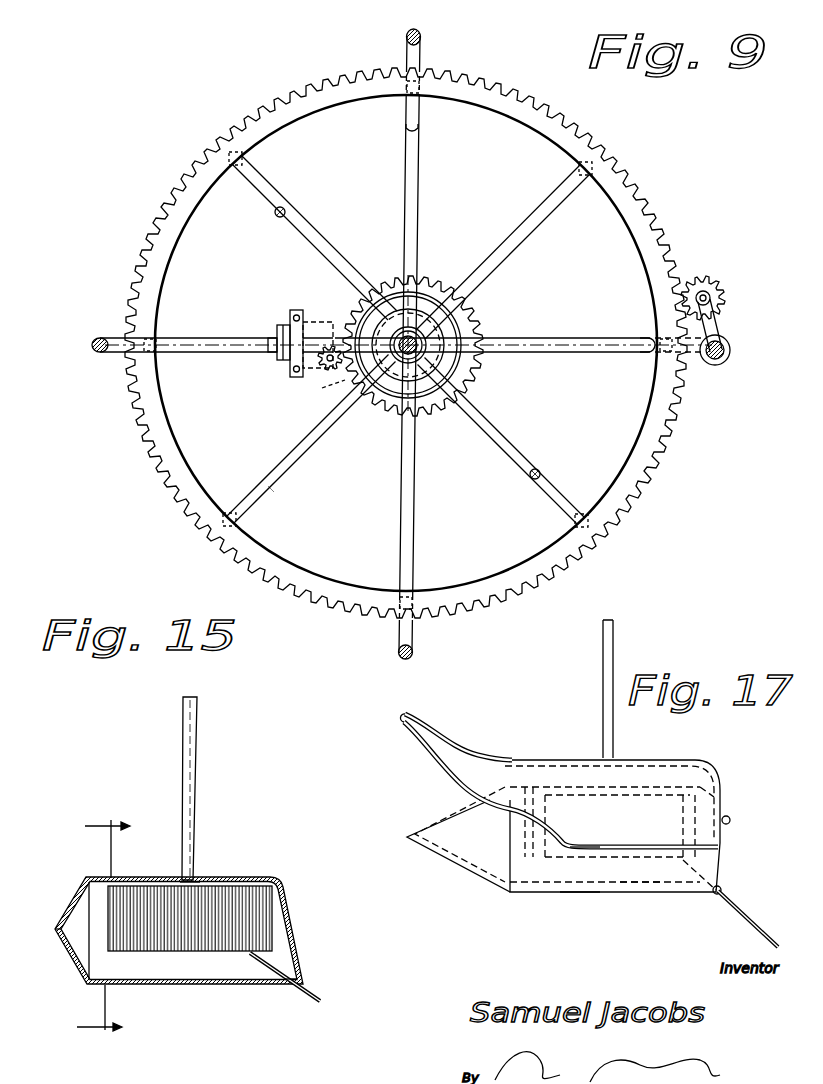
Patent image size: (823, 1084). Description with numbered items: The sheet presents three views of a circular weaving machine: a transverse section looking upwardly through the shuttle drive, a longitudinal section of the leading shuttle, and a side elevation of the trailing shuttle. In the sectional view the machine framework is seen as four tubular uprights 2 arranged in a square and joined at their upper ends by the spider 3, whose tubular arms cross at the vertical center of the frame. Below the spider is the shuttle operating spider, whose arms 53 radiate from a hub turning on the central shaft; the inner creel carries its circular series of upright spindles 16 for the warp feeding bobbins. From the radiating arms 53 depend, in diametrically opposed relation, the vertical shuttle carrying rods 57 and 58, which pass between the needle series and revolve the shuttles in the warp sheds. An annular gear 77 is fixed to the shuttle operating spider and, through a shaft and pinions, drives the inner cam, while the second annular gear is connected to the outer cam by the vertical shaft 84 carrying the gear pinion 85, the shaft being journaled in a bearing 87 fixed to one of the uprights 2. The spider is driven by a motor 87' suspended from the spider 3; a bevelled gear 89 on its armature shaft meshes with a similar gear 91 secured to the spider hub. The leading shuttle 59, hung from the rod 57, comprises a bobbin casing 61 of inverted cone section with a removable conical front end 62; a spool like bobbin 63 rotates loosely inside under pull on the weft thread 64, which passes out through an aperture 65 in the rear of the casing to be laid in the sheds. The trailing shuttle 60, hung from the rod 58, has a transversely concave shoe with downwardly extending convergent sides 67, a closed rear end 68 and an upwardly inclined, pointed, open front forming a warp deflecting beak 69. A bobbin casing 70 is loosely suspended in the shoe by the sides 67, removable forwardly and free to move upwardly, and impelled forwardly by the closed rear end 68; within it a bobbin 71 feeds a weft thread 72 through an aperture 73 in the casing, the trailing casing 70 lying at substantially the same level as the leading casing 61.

In FIG. 9, the uprights 2 is at (728, 349).
In FIG. 9, the spider 3 is at (426, 201).
In FIG. 9, the arms 53 is at (272, 486).
In FIG. 9, the shuttle carrying rod 57 is at (279, 218).
In FIG. 15, the shuttle carrying rod 57 is at (194, 792).
In FIG. 9, the shuttle carrying rod 58 is at (540, 469).
In FIG. 17, the shuttle carrying rod 58 is at (604, 707).
In FIG. 9, the annular gear 77 is at (484, 332).
In FIG. 9, the vertical shaft 84 is at (710, 296).
In FIG. 9, the gear pinion 85 is at (706, 281).
In FIG. 9, the bearing 87 is at (735, 318).
In FIG. 9, the motor 87' is at (305, 327).
In FIG. 9, the bevelled gear 89 is at (335, 386).
In FIG. 9, the bevelled gear 91 is at (393, 390).
In FIG. 15, the upright spindles 16 is at (103, 930).
In FIG. 15, the leading shuttle 59 is at (215, 860).
In FIG. 15, the bobbin casing 61 is at (258, 877).
In FIG. 15, the conical front end 62 is at (56, 936).
In FIG. 15, the bobbin 63 is at (261, 918).
In FIG. 15, the weft thread 64 is at (328, 1001).
In FIG. 15, the aperture 65 is at (297, 988).
In FIG. 17, the trailing shuttle 60 is at (656, 746).
In FIG. 17, the convergent sides 67 is at (585, 849).
In FIG. 17, the closed rear end 68 is at (729, 819).
In FIG. 17, the warp deflecting beak 69 is at (442, 724).
In FIG. 17, the bobbin casing 70 is at (573, 896).
In FIG. 17, the bobbin 71 is at (638, 866).
In FIG. 17, the weft thread 72 is at (746, 923).
In FIG. 17, the aperture 73 is at (722, 889).